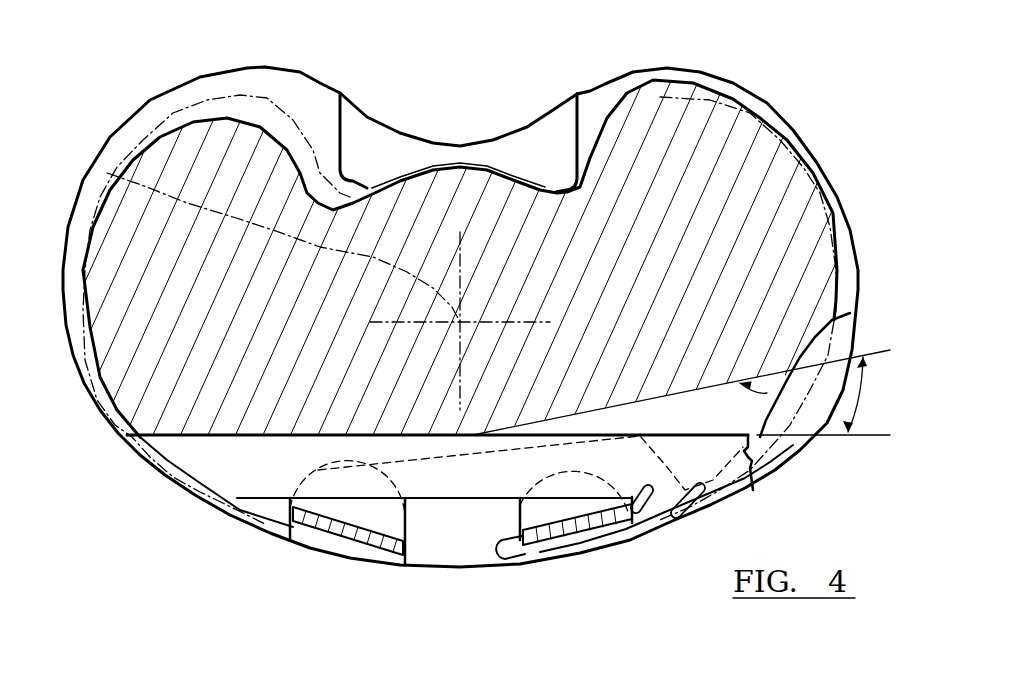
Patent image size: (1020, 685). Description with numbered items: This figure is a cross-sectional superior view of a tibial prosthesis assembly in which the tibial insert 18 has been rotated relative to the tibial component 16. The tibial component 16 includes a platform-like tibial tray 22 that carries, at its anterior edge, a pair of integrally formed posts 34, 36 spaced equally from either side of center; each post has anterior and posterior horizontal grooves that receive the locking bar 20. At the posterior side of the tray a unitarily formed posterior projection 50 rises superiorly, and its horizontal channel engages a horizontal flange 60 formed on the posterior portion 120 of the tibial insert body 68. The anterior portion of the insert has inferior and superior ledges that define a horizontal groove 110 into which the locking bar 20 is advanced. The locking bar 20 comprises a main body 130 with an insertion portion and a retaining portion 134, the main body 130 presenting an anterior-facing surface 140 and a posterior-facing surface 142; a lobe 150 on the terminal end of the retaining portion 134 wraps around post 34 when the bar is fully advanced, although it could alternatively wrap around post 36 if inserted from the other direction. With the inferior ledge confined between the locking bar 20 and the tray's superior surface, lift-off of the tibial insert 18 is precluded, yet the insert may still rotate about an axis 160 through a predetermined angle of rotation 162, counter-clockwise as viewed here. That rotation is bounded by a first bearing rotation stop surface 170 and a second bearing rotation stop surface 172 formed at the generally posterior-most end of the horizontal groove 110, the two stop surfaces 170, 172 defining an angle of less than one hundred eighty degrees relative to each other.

The tibial component 16 is at (858, 270).
The tibial insert 18 is at (113, 230).
The locking bar 20 is at (723, 450).
The tibial tray 22 is at (72, 283).
The post 34 is at (600, 543).
The post 36 is at (352, 517).
The posterior projection 50 is at (545, 140).
The horizontal flange 60 is at (457, 193).
The tibial insert body 68 is at (765, 162).
The horizontal groove 110 is at (147, 438).
The posterior portion 120 is at (422, 197).
The main body 130 is at (445, 485).
The retaining portion 134 is at (667, 518).
The anterior-facing surface 140 is at (492, 500).
The posterior-facing surface 142 is at (197, 431).
The lobe 150 is at (507, 548).
The axis 160 is at (117, 170).
The angle of rotation 162 is at (848, 437).
The first bearing rotation stop surface 170 is at (203, 440).
The second bearing rotation stop surface 172 is at (850, 313).